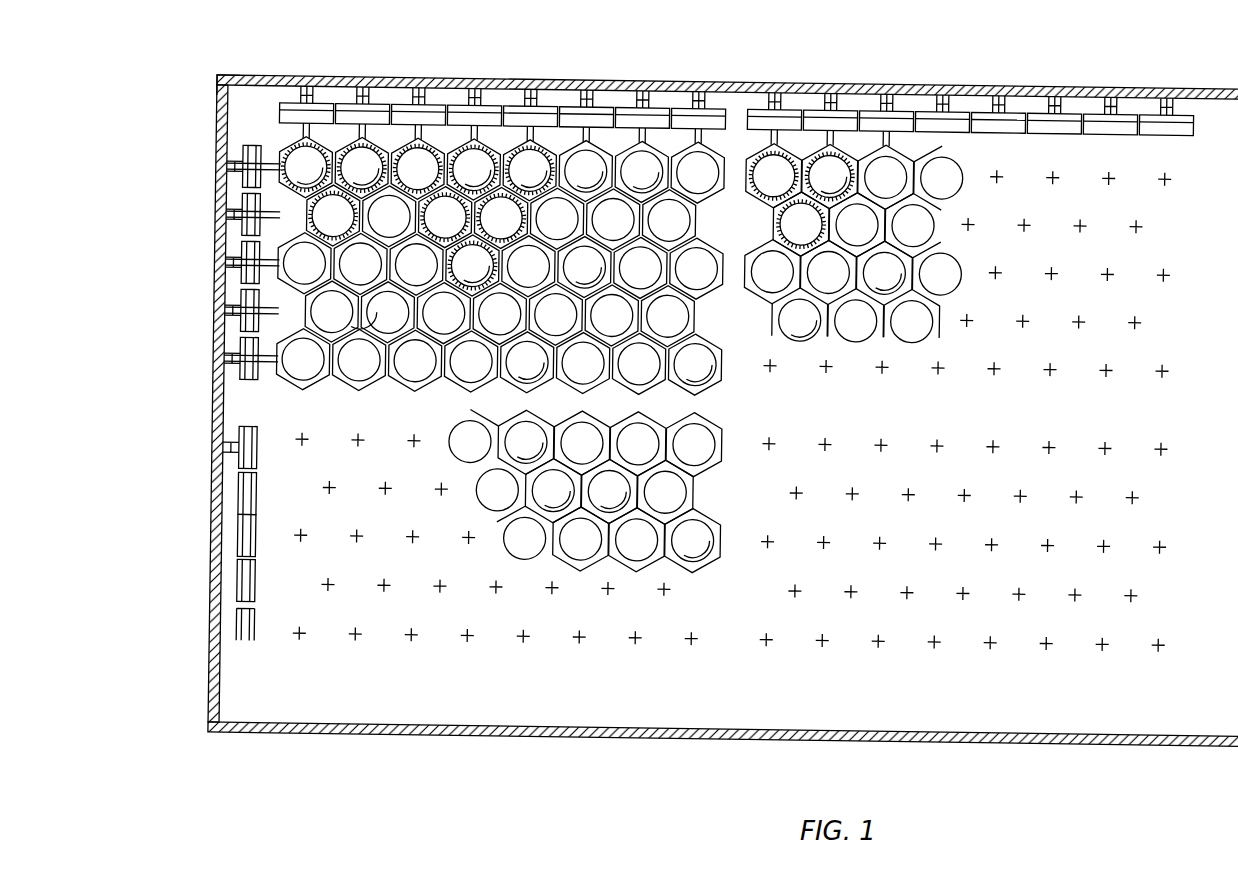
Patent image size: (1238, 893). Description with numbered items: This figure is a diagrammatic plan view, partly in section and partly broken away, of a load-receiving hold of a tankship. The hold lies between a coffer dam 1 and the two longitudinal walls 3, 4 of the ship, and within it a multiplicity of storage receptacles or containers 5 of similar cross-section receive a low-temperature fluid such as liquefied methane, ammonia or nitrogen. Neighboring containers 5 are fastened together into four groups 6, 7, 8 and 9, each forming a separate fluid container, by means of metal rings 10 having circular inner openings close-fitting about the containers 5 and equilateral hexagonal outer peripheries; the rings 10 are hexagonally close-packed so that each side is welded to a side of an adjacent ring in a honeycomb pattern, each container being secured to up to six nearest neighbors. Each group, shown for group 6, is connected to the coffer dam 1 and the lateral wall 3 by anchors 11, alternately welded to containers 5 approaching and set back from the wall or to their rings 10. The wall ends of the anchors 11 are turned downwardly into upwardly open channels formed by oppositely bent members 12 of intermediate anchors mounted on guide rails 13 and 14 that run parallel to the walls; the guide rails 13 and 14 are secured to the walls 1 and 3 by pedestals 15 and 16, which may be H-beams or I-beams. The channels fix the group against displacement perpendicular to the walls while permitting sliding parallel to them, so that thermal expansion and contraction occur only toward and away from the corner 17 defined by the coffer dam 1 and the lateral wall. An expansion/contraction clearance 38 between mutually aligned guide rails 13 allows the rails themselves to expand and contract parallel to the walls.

The coffer dam 1 is at (212, 405).
The longitudinal wall 3 is at (735, 87).
The longitudinal wall 4 is at (734, 742).
The storage receptacle 5 is at (697, 437).
The group of containers 6 is at (503, 147).
The group of containers 7 is at (1058, 332).
The group of containers 8 is at (973, 549).
The group of containers 9 is at (418, 583).
The metal ring 10 is at (750, 292).
The anchor 11 is at (580, 133).
The oppositely bent member 12 is at (648, 127).
The guide rail 13 is at (243, 333).
The guide rail 14 is at (605, 110).
The pedestal 15 is at (242, 224).
The pedestal 16 is at (474, 100).
The corner 17 is at (221, 76).
The expansion/contraction clearance 38 is at (390, 103).